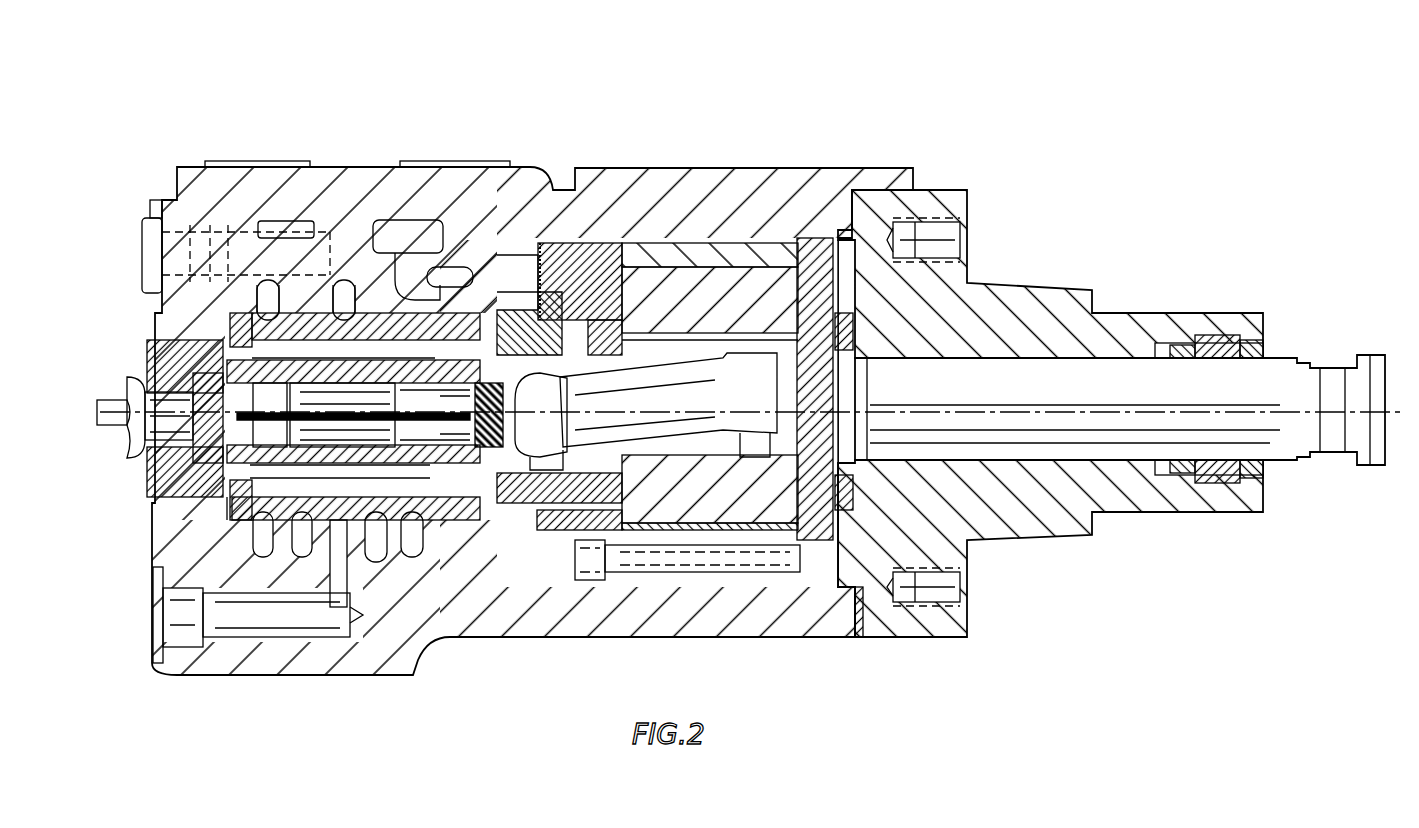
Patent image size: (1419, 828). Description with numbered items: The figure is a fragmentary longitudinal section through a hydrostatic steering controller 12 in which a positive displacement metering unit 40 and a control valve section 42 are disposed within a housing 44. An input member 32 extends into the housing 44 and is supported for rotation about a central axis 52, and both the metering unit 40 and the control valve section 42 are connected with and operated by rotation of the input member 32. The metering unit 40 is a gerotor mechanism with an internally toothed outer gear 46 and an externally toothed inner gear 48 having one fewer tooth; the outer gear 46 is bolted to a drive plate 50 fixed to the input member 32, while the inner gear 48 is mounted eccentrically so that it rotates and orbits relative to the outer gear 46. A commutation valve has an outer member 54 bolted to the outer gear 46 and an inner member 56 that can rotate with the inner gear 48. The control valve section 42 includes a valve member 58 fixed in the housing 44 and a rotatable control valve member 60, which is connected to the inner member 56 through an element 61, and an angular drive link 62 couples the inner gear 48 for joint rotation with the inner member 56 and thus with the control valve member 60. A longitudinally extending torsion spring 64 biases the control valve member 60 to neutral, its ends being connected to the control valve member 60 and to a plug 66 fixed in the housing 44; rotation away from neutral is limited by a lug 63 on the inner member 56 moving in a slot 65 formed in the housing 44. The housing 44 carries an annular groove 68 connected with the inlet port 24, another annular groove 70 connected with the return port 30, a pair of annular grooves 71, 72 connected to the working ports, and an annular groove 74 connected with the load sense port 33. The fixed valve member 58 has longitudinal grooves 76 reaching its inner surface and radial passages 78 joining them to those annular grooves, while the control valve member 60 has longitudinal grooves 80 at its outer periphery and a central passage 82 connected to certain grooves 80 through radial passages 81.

The hydraulic unit 12 is at (688, 118).
The inlet port 24 is at (255, 165).
The return port 30 is at (458, 165).
The input member 32 is at (1020, 380).
The load sense port 33 is at (165, 600).
The metering unit 40 is at (808, 228).
The control valve section 42 is at (215, 312).
The housing 44 is at (520, 230).
The outer gear 46 is at (692, 252).
The inner gear 48 is at (730, 293).
The drive plate 50 is at (822, 515).
The central axis 52 is at (1065, 412).
The outer member 54 is at (583, 268).
The inner member 56 is at (510, 497).
The valve member 58 is at (447, 270).
The rotatable control valve member 60 is at (460, 465).
The element 61 is at (512, 413).
The angular drive link 62 is at (640, 406).
The lug 63 is at (541, 300).
The torsion spring 64 is at (257, 417).
The slot 65 is at (505, 320).
The plug 66 is at (165, 363).
The annular groove 68 is at (300, 222).
The annular groove 70 is at (412, 228).
The annular groove 71 is at (243, 275).
The annular groove 72 is at (378, 325).
The annular groove 74 is at (318, 300).
The longitudinal grooves 76 is at (353, 348).
The radial passages 78 is at (370, 307).
The longitudinal grooves 80 is at (315, 470).
The radial passages 81 is at (232, 497).
The central passage 82 is at (353, 415).